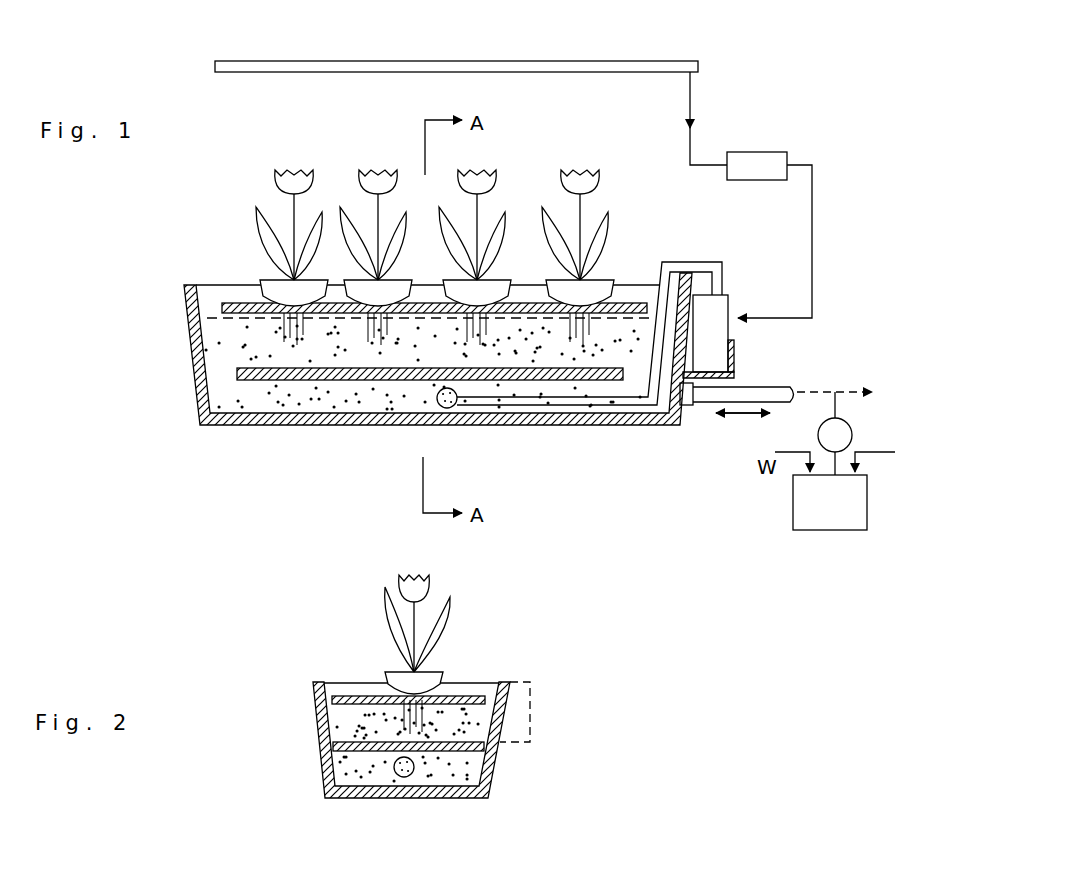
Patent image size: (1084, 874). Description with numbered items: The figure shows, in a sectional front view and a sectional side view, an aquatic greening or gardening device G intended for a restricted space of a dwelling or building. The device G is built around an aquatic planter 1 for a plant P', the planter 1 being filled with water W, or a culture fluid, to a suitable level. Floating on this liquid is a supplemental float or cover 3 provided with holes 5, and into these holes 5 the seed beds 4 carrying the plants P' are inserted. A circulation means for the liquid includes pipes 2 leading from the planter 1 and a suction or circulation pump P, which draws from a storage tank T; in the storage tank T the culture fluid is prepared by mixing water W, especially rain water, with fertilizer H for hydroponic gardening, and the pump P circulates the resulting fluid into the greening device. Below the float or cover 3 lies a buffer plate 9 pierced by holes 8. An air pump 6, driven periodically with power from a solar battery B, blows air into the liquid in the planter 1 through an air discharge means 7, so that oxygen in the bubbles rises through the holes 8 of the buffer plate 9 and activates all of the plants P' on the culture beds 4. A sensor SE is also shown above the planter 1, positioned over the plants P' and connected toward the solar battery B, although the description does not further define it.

In FIG. 1, the aquatic planter 1 is at (270, 426).
In FIG. 2, the aquatic planter 1 is at (318, 742).
In FIG. 1, the pipes 2 is at (752, 387).
In FIG. 1, the supplemental float or cover 3 is at (628, 304).
In FIG. 2, the supplemental float or cover 3 is at (348, 695).
In FIG. 1, the seed beds 4 is at (548, 284).
In FIG. 2, the seed beds 4 is at (402, 688).
In FIG. 1, the holes 5 is at (437, 303).
In FIG. 2, the holes 5 is at (440, 696).
In FIG. 1, the air pump 6 is at (708, 336).
In FIG. 2, the air pump 6 is at (515, 712).
In FIG. 1, the air discharge means 7 is at (448, 408).
In FIG. 2, the air discharge means 7 is at (410, 777).
In FIG. 1, the holes 8 is at (575, 383).
In FIG. 2, the holes 8 is at (372, 758).
In FIG. 1, the buffer plate 9 is at (378, 380).
In FIG. 2, the buffer plate 9 is at (468, 748).
In FIG. 1, the sensor SE is at (493, 60).
In FIG. 1, the solar battery B is at (751, 195).
In FIG. 1, the suction or circulation pump P is at (835, 433).
In FIG. 1, the storage tank T is at (835, 491).
In FIG. 1, the water W is at (220, 365).
In FIG. 1, the fertilizer H is at (884, 465).
In FIG. 1, the aquatic greening or gardening device G is at (186, 362).
In FIG. 1, the plant P' is at (432, 201).
In FIG. 2, the plant P' is at (443, 623).